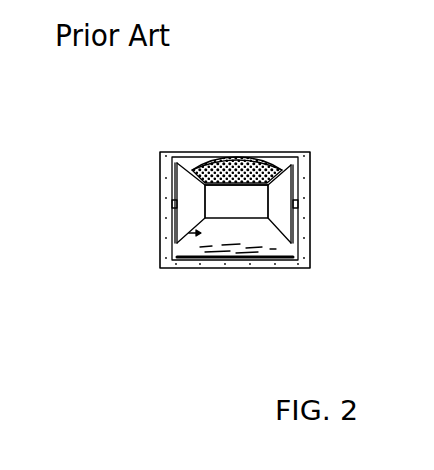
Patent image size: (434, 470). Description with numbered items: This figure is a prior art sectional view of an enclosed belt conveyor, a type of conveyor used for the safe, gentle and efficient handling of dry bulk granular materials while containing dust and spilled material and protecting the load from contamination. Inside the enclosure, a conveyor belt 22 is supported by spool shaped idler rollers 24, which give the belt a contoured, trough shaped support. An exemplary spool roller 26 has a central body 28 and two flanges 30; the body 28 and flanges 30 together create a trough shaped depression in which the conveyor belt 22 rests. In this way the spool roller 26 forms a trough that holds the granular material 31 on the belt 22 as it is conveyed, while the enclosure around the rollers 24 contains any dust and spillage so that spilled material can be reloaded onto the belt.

The conveyor belt 22 is at (197, 165).
The spool shaped idler rollers 24 is at (187, 207).
The spool roller 26 is at (192, 236).
The central body 28 is at (232, 218).
The flanges 30 is at (183, 178).
The granular material 31 is at (262, 166).